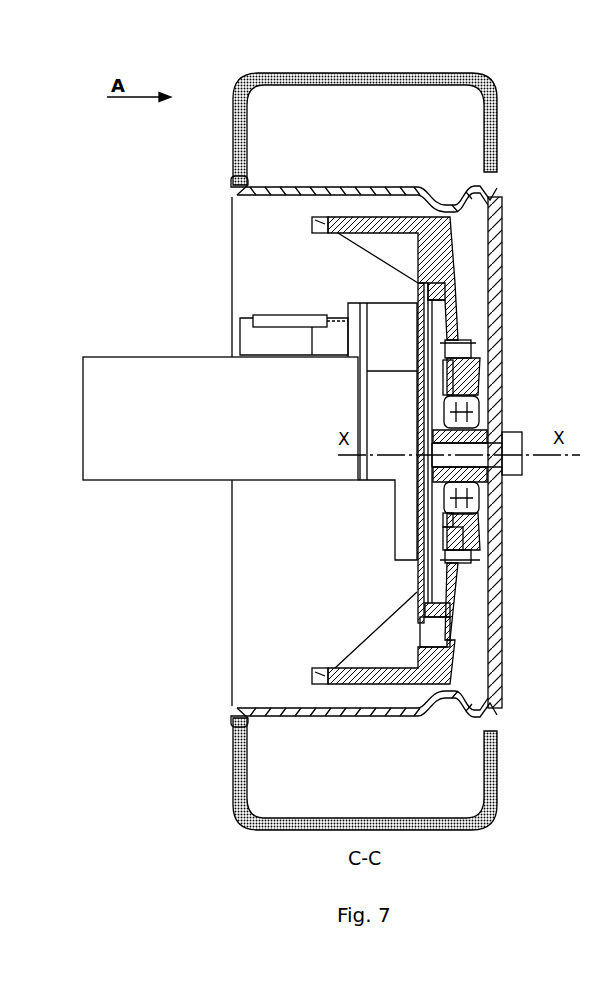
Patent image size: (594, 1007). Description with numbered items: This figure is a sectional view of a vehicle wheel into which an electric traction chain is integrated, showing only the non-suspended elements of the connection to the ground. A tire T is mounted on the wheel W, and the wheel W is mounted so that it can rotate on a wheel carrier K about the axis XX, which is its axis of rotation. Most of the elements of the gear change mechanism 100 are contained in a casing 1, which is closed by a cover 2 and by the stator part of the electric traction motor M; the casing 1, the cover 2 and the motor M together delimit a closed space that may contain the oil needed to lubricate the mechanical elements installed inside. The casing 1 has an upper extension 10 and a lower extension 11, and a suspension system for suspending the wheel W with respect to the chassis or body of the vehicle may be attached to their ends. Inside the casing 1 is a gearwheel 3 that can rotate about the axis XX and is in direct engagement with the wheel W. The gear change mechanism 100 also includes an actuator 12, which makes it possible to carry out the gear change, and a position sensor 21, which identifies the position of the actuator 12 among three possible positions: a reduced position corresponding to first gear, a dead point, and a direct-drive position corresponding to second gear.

The casing 1 is at (453, 677).
The cover 2 is at (418, 572).
The gearwheel 3 is at (453, 611).
The upper extension 10 is at (313, 220).
The lower extension 11 is at (313, 675).
The actuator 12 is at (263, 338).
The position sensor 21 is at (257, 317).
The gear change mechanism 100 is at (365, 274).
The electric traction motor M is at (158, 463).
The wheel carrier K is at (470, 367).
The wheel W is at (490, 200).
The tire T is at (403, 451).